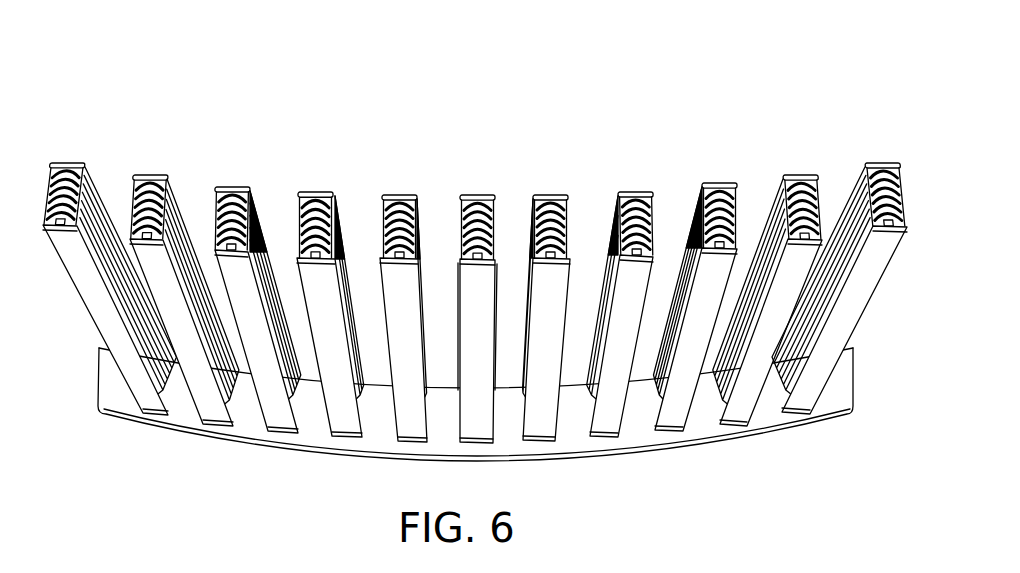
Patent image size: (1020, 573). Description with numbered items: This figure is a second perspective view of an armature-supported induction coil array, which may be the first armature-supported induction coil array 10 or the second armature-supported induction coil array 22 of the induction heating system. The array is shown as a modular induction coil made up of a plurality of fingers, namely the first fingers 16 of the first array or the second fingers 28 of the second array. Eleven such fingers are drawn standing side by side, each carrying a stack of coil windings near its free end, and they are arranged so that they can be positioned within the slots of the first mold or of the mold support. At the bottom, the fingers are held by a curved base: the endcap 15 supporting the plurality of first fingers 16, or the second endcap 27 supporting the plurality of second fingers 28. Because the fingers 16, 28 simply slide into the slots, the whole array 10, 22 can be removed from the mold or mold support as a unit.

The first armature-supported induction coil array 10 is at (160, 92).
The second armature-supported induction coil array 22 is at (474, 253).
The first fingers 16 is at (480, 188).
The second fingers 28 is at (474, 263).
The endcap 15 is at (252, 432).
The second endcap 27 is at (475, 419).